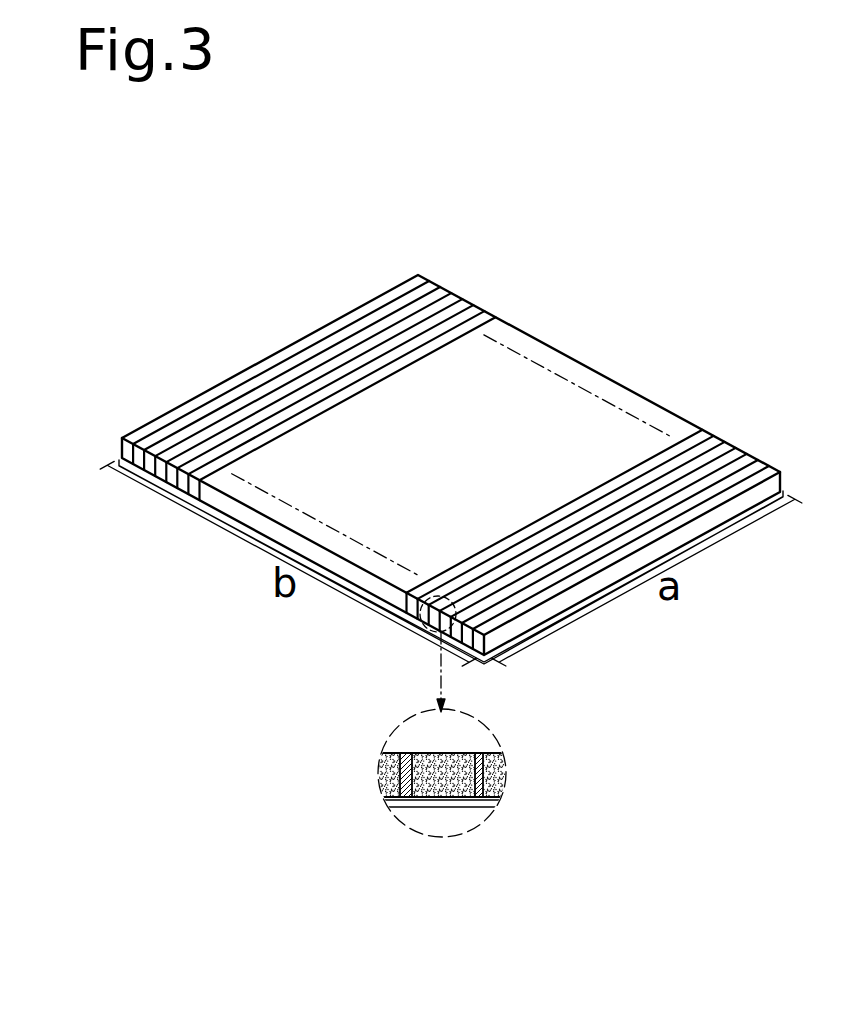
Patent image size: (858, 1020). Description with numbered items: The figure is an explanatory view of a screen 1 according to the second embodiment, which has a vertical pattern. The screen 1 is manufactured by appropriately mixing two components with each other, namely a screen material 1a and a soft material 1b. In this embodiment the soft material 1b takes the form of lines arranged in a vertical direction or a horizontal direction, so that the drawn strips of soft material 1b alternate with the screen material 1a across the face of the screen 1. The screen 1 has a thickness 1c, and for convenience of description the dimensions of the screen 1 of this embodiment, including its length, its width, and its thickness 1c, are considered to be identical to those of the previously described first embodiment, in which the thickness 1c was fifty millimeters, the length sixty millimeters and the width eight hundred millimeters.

The screen 1 is at (104, 440).
The screen material 1a is at (475, 306).
The soft material 1b is at (220, 443).
The thickness 1c is at (537, 610).